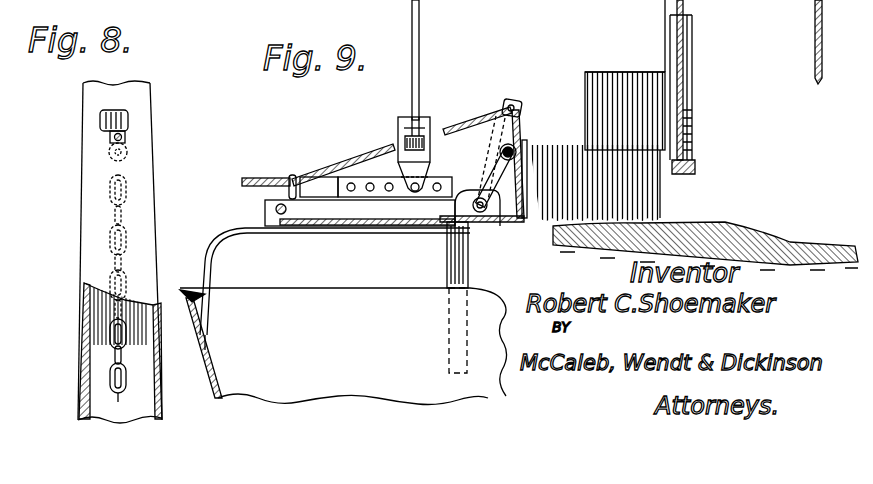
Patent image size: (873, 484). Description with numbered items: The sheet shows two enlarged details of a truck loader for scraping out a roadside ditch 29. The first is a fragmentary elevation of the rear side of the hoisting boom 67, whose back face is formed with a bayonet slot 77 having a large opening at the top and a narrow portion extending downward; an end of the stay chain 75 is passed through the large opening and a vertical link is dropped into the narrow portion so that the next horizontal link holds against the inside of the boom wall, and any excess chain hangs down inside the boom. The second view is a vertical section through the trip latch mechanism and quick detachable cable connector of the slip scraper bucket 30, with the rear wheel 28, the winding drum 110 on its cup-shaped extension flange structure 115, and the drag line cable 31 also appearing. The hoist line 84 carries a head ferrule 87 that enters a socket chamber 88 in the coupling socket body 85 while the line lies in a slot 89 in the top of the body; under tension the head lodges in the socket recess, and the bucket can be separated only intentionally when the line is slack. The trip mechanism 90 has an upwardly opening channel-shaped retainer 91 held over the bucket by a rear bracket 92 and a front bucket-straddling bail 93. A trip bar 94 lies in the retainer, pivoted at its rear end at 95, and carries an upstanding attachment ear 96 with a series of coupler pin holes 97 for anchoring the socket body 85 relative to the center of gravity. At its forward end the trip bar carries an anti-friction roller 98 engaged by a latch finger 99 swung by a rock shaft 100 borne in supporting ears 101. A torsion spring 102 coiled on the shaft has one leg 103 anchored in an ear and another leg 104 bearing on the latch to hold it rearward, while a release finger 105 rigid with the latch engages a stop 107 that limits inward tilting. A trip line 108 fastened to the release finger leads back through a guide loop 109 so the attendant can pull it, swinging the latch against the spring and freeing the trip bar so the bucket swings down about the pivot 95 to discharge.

In FIG. 9, the rear wheel 28 is at (662, 200).
In FIG. 9, the roadside ditch 29 is at (777, 240).
In FIG. 9, the slip scraper bucket 30 is at (300, 298).
In FIG. 9, the drag line cable 31 is at (815, 30).
In FIG. 8, the hoisting boom 67 is at (88, 236).
In FIG. 8, the stay chain 75 is at (114, 340).
In FIG. 8, the bayonet slot 77 is at (100, 123).
In FIG. 9, the hoist line 84 is at (421, 18).
In FIG. 9, the quick separable coupling socket body 85 is at (398, 150).
In FIG. 9, the head ferrule 87 is at (402, 138).
In FIG. 9, the socket chamber 88 is at (373, 157).
In FIG. 9, the slot 89 is at (405, 122).
In FIG. 9, the trip mechanism 90 is at (396, 247).
In FIG. 9, the channel-shaped retainer 91 is at (303, 228).
In FIG. 9, the rear bracket 92 is at (210, 258).
In FIG. 9, the front bucket-straddling bail 93 is at (451, 280).
In FIG. 9, the trip bar 94 is at (332, 208).
In FIG. 9, the trip bar pivot 95 is at (276, 210).
In FIG. 9, the attachment ear 96 is at (319, 187).
In FIG. 9, the coupler pin holes 97 is at (370, 197).
In FIG. 9, the anti-friction roller 98 is at (495, 222).
In FIG. 9, the latch finger 99 is at (393, 197).
In FIG. 9, the rock shaft 100 is at (500, 153).
In FIG. 9, the supporting ears 101 is at (494, 120).
In FIG. 9, the torsion spring 102 is at (488, 165).
In FIG. 9, the spring leg 103 is at (486, 126).
In FIG. 9, the spring leg 104 is at (517, 207).
In FIG. 9, the release finger 105 is at (510, 100).
In FIG. 9, the stop 107 is at (515, 140).
In FIG. 9, the trip line 108 is at (256, 178).
In FIG. 9, the guide loop 109 is at (292, 175).
In FIG. 9, the winding drum 110 is at (690, 92).
In FIG. 9, the extension flange structure 115 is at (666, 90).